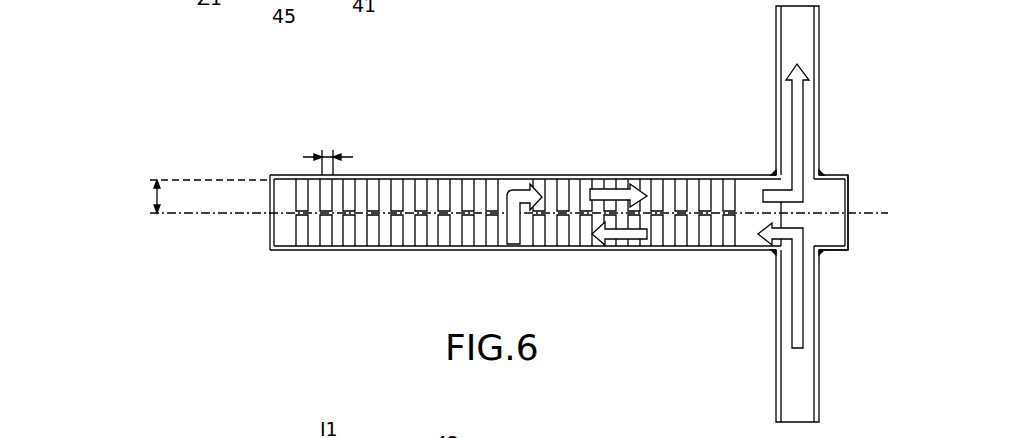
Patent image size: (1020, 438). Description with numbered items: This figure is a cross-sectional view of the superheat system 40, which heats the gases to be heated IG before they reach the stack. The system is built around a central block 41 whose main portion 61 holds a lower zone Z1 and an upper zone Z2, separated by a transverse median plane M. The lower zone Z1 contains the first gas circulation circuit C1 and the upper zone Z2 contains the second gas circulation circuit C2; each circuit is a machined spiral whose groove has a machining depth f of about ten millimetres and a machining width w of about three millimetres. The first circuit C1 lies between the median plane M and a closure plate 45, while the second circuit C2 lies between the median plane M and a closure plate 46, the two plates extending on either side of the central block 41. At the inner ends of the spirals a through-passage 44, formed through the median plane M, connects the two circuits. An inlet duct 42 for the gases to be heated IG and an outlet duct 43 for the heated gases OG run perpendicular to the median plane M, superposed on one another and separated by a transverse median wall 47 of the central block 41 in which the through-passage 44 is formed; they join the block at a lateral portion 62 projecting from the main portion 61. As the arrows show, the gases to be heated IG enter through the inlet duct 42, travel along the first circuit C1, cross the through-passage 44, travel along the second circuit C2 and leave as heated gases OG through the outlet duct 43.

The superheat system 40 is at (370, 133).
The central block 41 is at (278, 205).
The inlet duct 42 is at (776, 387).
The outlet duct 43 is at (776, 43).
The through-passage 44 is at (513, 188).
The closure plate 45 is at (558, 242).
The closure plate 46 is at (560, 182).
The transverse median wall 47 is at (837, 208).
The main portion 61 is at (617, 168).
The lateral portion 62 is at (834, 254).
The lower zone Z1 is at (284, 237).
The upper zone Z2 is at (283, 192).
The first gas circulation circuit C1 is at (410, 240).
The second gas circulation circuit C2 is at (422, 190).
The transverse median plane M is at (198, 214).
The heated gases OG is at (800, 90).
The gases to be heated IG is at (800, 330).
The machining width w is at (328, 153).
The machining depth f is at (150, 196).